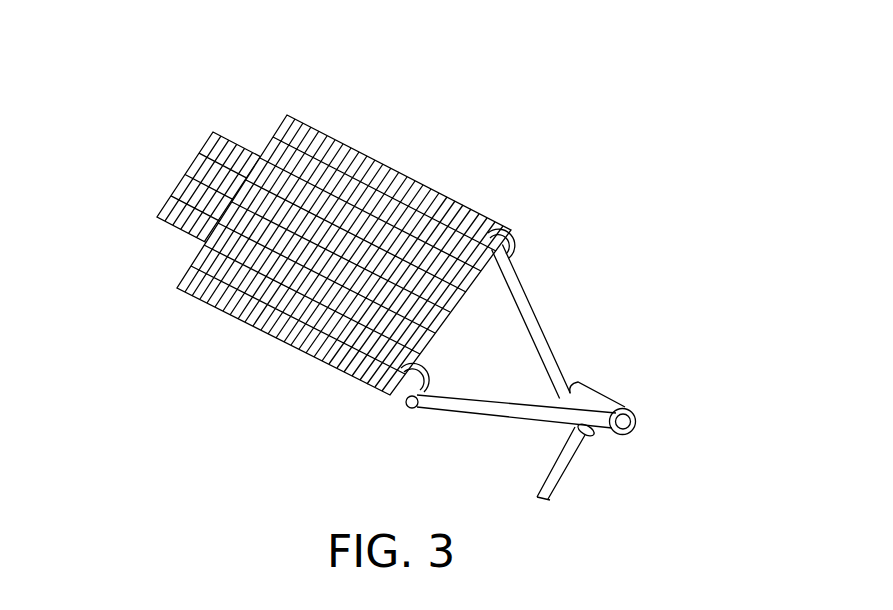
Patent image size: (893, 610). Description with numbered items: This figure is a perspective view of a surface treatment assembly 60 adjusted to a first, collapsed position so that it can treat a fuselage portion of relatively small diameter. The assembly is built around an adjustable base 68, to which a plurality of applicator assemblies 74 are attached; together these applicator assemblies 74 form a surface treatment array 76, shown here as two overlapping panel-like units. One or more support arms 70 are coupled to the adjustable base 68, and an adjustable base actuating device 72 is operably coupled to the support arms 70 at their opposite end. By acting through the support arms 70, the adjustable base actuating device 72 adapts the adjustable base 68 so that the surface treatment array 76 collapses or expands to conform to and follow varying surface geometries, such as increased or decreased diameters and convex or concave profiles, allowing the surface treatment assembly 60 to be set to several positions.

The surface treatment assembly 60 is at (133, 88).
The adjustable base 68 is at (410, 396).
The support arm 70 is at (523, 305).
The adjustable base actuating device 72 is at (604, 436).
The applicator assembly 74 is at (157, 216).
The surface treatment array 76 is at (322, 135).